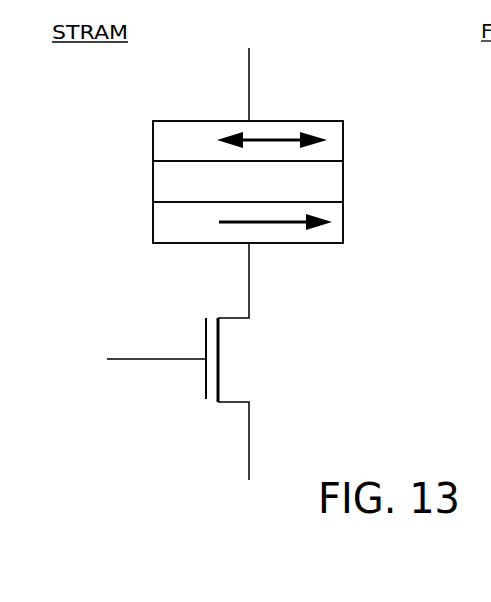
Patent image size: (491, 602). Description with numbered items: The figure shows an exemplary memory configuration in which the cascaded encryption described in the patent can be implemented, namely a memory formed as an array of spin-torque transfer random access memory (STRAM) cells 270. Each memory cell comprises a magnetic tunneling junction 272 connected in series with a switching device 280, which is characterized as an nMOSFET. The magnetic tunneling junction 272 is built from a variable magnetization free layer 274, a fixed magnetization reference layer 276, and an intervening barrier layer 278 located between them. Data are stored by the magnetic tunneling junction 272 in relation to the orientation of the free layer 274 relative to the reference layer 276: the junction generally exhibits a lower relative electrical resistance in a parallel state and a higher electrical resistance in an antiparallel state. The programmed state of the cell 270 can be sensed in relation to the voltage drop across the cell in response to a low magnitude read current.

The spin-torque transfer random access memory (STRAM) cell 270 is at (372, 66).
The magnetic tunneling junction 272 is at (130, 160).
The free layer 274 is at (343, 142).
The barrier layer 278 is at (343, 183).
The reference layer 276 is at (343, 225).
The switching device 280 is at (221, 356).